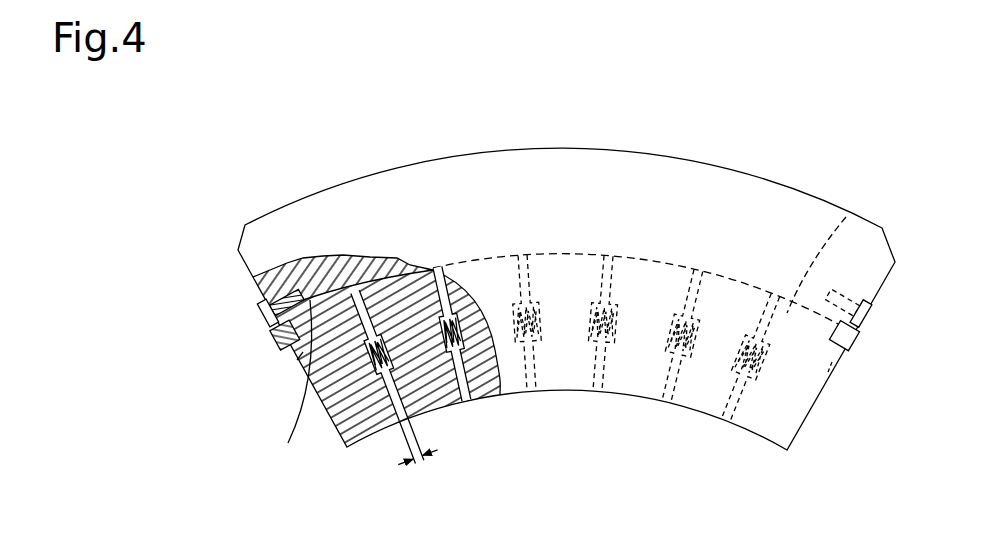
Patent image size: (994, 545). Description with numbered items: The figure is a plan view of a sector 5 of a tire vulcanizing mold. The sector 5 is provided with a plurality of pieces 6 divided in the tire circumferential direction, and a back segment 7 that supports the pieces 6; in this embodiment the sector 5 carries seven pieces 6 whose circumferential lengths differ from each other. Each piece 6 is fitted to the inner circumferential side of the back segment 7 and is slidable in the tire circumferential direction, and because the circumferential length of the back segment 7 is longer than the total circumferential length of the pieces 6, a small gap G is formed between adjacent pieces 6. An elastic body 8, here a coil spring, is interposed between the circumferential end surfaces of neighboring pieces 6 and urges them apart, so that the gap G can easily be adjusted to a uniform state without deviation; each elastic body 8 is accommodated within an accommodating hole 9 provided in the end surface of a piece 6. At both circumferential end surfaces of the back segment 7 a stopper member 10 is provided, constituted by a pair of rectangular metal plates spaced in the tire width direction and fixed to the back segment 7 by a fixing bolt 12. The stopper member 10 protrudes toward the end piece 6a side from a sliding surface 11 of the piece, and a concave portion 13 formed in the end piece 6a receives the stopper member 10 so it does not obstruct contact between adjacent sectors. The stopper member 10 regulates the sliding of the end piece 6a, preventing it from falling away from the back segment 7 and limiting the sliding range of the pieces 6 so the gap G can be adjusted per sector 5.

The sector 5 is at (318, 437).
The piece 6 is at (648, 275).
The end piece 6a is at (323, 257).
The back segment 7 is at (259, 229).
The elastic body 8 is at (472, 343).
The accommodating hole 9 is at (448, 352).
The stopper member 10 is at (275, 342).
The sliding surface 11 is at (279, 379).
The fixing bolt 12 is at (260, 310).
The concave portion 13 is at (303, 352).
The gap G is at (410, 440).